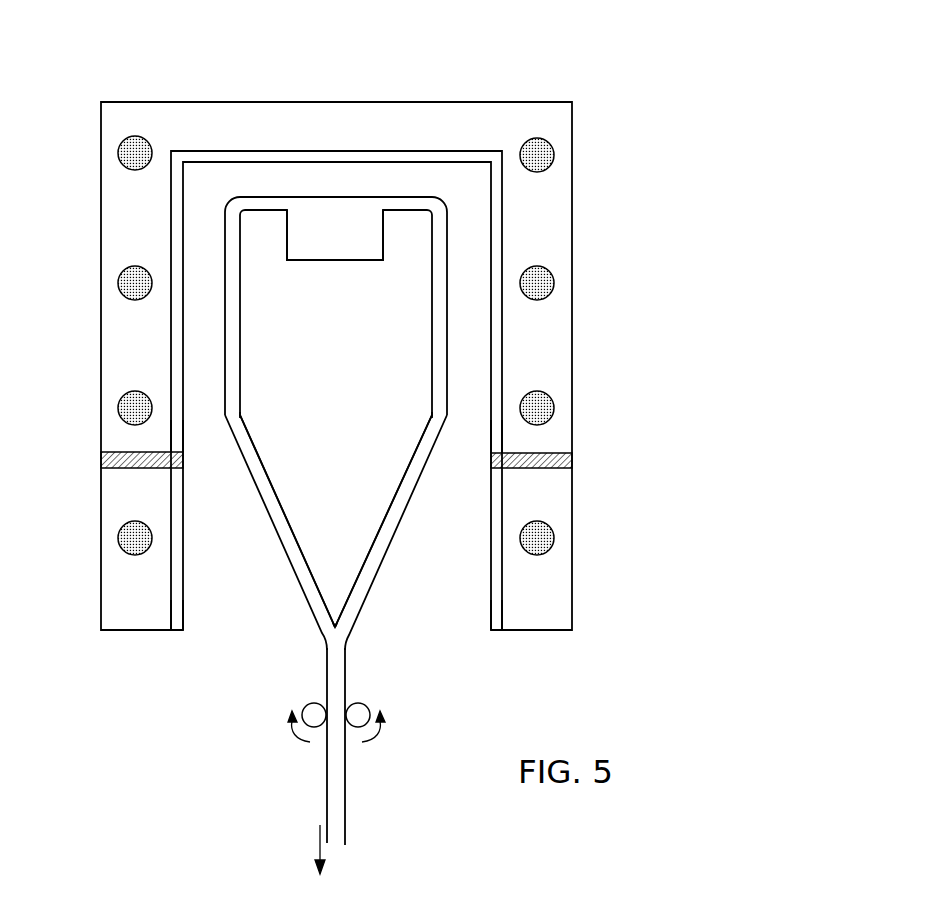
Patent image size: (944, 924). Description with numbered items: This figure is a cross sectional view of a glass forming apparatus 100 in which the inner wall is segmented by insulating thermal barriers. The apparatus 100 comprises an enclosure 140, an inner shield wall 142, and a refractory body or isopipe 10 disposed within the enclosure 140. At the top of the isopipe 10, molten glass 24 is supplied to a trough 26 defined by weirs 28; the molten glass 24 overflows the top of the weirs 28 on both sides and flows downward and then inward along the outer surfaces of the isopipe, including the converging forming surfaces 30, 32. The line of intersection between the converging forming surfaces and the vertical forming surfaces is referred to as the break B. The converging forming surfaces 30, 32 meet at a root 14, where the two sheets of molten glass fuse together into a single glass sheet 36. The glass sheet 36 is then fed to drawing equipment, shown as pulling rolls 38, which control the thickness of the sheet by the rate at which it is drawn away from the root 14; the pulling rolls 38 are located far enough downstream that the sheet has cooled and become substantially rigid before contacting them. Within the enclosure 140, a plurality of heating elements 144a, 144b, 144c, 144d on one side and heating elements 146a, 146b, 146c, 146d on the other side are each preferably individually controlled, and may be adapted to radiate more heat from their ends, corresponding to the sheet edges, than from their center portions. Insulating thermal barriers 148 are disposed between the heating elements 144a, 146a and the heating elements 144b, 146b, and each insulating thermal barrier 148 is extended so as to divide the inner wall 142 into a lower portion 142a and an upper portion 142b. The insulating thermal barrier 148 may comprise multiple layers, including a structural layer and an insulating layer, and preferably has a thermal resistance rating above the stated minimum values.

The apparatus 100 is at (208, 59).
The enclosure 140 is at (458, 103).
The inner shield wall 142 is at (197, 320).
The lower portion 142a is at (183, 613).
The upper portion 142b is at (183, 437).
The insulating thermal barrier 148 is at (117, 468).
The heating element 144a is at (533, 557).
The heating element 144b is at (545, 393).
The heating element 144c is at (553, 273).
The heating element 144d is at (540, 171).
The heating element 146a is at (137, 557).
The heating element 146b is at (123, 392).
The heating element 146c is at (118, 277).
The heating element 146d is at (133, 170).
The molten glass 24 is at (360, 197).
The refractory body 10 is at (348, 363).
The weirs 28 is at (270, 209).
The trough 26 is at (377, 258).
The converging forming surface 32 is at (265, 480).
The converging forming surface 30 is at (407, 482).
The root 14 is at (335, 627).
The glass sheet 36 is at (345, 773).
The pulling rolls 38 is at (304, 710).
The break B is at (236, 415).